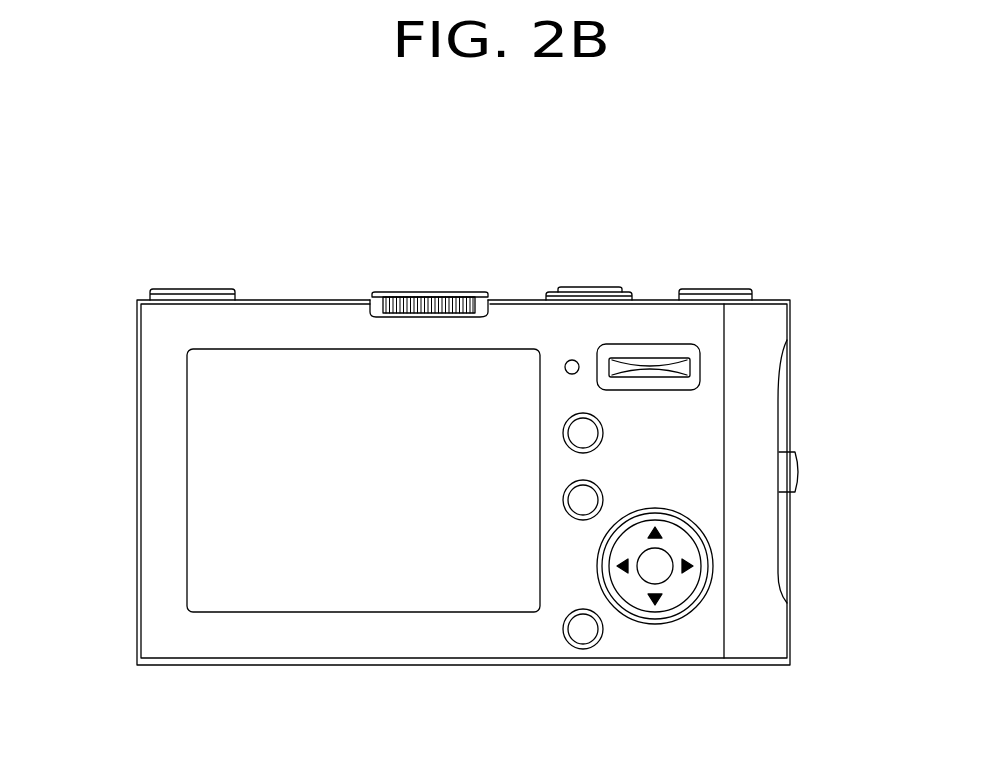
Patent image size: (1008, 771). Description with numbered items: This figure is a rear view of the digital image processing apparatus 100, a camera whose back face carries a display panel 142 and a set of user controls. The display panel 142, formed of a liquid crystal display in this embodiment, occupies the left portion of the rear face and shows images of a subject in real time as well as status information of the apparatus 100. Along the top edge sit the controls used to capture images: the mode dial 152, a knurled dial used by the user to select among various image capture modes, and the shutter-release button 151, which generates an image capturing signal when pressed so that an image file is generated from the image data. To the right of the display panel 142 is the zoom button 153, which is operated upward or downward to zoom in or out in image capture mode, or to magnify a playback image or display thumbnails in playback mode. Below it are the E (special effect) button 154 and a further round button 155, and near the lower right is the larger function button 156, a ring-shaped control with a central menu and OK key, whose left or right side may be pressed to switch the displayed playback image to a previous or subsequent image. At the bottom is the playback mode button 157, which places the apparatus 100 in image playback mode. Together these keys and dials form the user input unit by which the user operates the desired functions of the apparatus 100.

The digital image processing apparatus 100 is at (765, 249).
The display panel 142 is at (200, 466).
The shutter-release button 151 is at (587, 288).
The mode dial 152 is at (426, 294).
The zoom button 153 is at (651, 368).
The E (special effect) button 154 is at (588, 434).
The function button 155 is at (578, 500).
The function button 156 is at (672, 575).
The playback mode button 157 is at (582, 632).